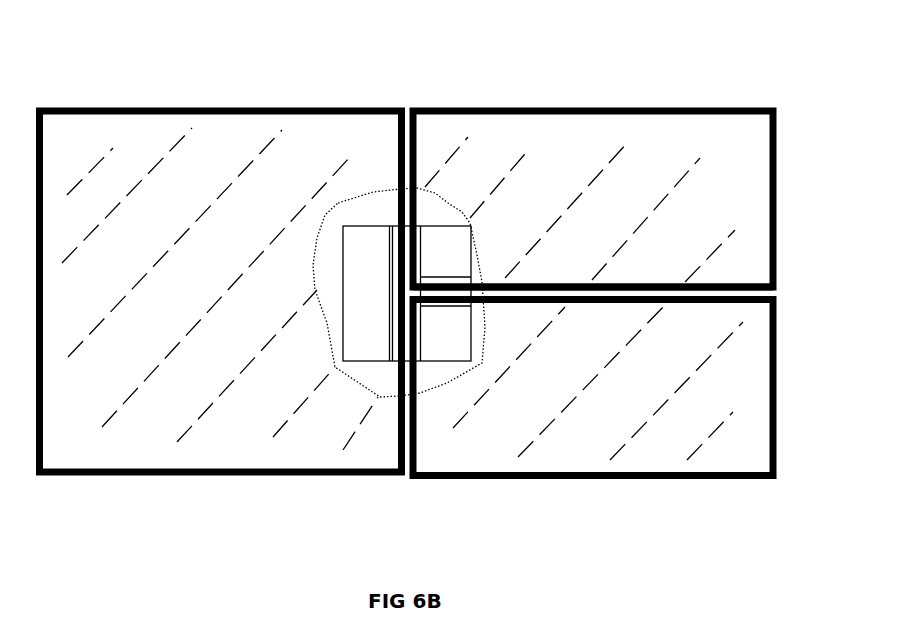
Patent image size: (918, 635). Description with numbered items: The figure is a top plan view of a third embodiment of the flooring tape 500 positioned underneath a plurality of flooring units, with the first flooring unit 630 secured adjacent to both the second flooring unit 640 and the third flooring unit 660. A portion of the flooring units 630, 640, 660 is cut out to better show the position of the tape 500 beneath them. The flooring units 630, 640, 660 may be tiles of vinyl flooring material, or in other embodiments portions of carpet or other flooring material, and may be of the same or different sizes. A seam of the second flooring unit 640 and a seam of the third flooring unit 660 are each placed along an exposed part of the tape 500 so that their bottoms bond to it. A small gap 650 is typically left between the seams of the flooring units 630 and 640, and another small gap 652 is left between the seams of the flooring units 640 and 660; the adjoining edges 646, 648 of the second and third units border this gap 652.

The first flooring unit 630 is at (70, 170).
The second flooring unit 640 is at (733, 143).
The third flooring unit 660 is at (672, 450).
The flooring tape 500 is at (448, 247).
The bottom edge of second tile 646 is at (773, 287).
The top edge of third tile 648 is at (773, 297).
The gap 652 is at (770, 290).
The gap 650 is at (408, 480).